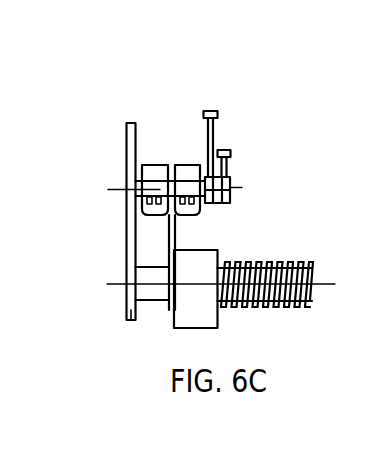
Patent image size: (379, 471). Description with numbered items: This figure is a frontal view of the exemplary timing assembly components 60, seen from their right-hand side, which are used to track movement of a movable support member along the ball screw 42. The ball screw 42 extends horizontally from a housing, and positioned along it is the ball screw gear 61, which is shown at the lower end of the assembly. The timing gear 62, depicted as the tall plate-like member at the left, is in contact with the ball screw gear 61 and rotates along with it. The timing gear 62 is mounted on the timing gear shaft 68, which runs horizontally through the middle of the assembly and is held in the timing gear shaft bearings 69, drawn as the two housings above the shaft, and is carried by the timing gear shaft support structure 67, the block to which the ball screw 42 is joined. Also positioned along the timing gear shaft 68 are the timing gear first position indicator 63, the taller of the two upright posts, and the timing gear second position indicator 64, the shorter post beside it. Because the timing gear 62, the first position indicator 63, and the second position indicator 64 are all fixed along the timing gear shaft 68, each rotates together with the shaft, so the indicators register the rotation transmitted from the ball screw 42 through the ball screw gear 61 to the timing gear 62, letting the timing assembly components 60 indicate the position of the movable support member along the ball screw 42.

The ball screw 42 is at (297, 305).
The timing assembly components 60 is at (267, 108).
The ball screw gear 61 is at (131, 320).
The timing gear 62 is at (126, 152).
The timing gear first position indicator 63 is at (218, 117).
The timing gear second position indicator 64 is at (228, 167).
The timing gear shaft support structure 67 is at (176, 249).
The timing gear shaft 68 is at (140, 194).
The timing gear shaft bearings 69 is at (187, 172).